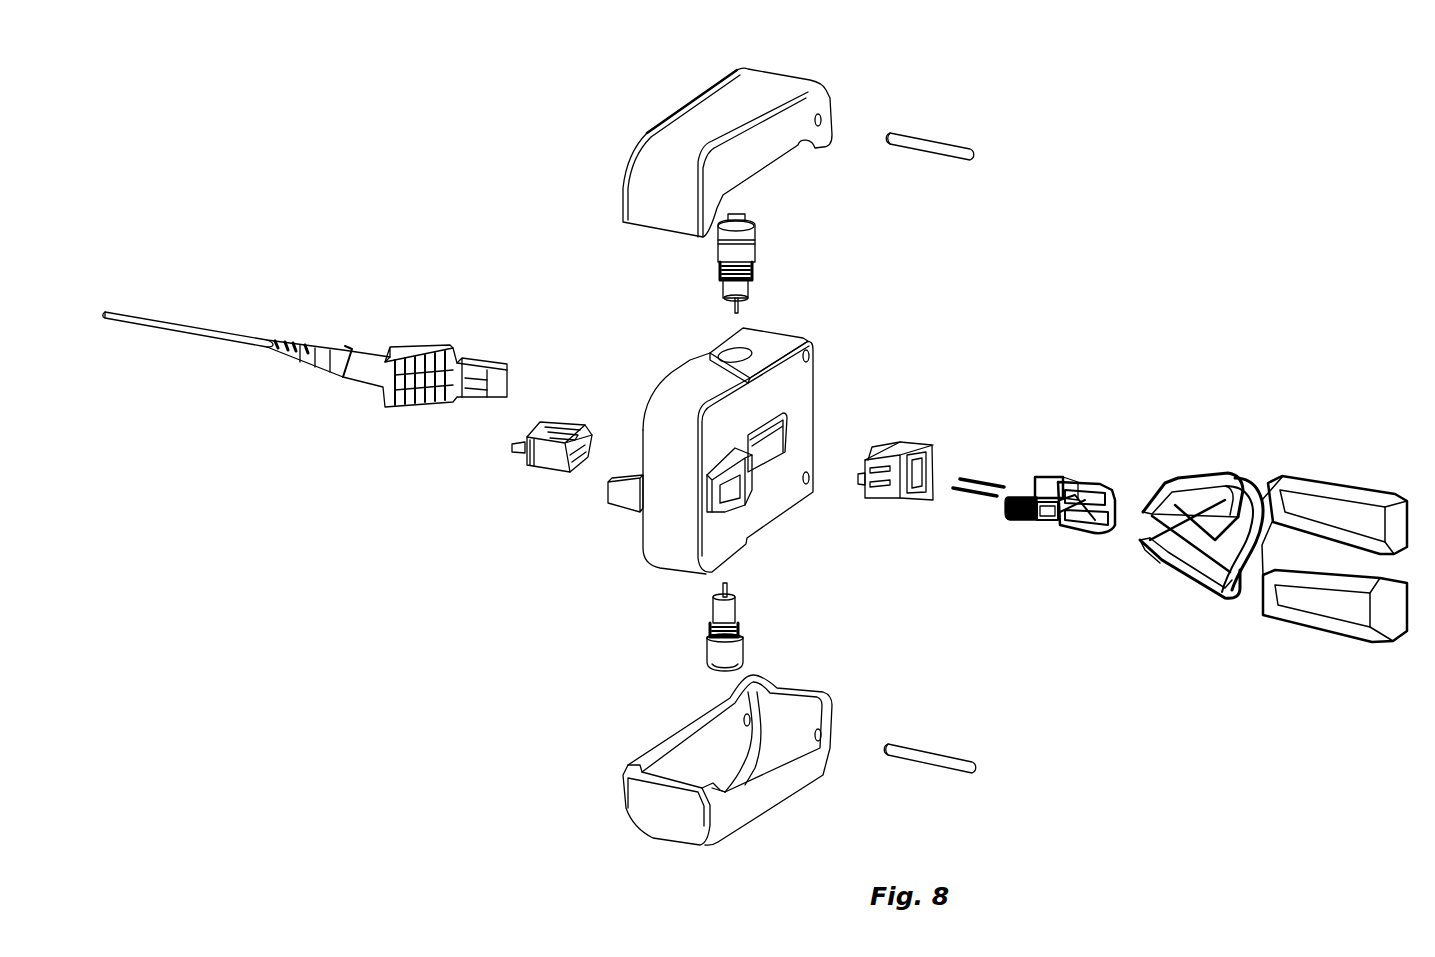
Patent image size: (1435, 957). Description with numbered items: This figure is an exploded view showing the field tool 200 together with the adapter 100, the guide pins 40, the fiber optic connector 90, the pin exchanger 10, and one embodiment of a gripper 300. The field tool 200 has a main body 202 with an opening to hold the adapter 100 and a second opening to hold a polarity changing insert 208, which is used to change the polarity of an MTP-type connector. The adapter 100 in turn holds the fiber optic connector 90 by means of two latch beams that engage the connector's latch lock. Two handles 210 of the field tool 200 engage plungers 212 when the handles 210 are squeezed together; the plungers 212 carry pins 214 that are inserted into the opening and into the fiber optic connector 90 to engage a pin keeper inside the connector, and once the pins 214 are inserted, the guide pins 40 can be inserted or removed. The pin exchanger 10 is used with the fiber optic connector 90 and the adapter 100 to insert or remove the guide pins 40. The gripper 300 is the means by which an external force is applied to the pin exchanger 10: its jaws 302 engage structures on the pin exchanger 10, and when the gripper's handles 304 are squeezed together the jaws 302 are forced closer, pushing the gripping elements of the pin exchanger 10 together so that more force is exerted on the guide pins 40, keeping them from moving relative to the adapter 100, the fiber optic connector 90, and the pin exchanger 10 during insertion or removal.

The pin exchanger 10 is at (1058, 532).
The guide pins 40 is at (963, 497).
The fiber optic connector 90 is at (442, 338).
The adapter 100 is at (883, 502).
The field tool 200 is at (945, 115).
The main body 202 is at (818, 398).
The polarity changing insert 208 is at (543, 478).
The handles 210 is at (823, 83).
The plungers 212 is at (755, 248).
The pins 214 is at (742, 305).
The gripper 300 is at (1279, 543).
The jaws 302 is at (1176, 478).
The handles 304 is at (1397, 493).